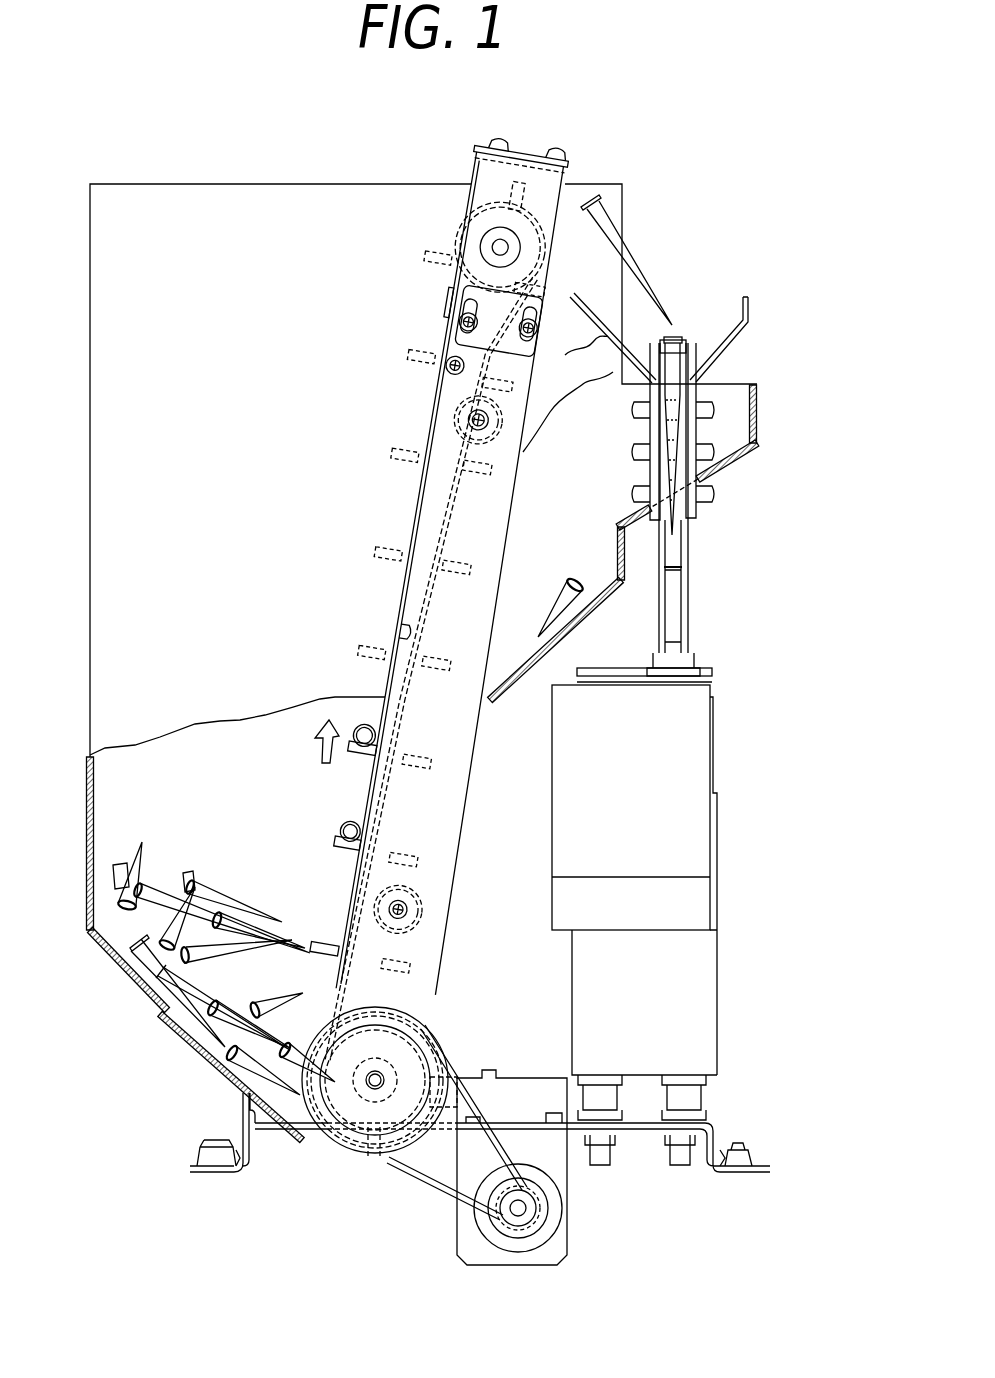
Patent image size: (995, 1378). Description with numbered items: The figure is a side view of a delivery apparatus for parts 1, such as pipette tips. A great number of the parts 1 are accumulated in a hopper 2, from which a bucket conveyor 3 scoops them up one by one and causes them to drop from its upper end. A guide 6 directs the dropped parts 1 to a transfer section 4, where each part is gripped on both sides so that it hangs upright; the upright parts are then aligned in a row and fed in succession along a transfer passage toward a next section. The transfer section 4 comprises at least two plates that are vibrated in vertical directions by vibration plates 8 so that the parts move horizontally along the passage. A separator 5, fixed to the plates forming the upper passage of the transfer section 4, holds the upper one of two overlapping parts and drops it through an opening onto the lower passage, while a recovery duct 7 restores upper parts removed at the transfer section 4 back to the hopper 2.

The parts 1 is at (643, 254).
The hopper 2 is at (91, 490).
The bucket conveyor 3 is at (479, 135).
The transfer section 4 is at (697, 540).
The separator 5 is at (690, 347).
The guide 6 is at (748, 298).
The recovery duct 7 is at (733, 455).
The vibration plates 8 is at (700, 856).